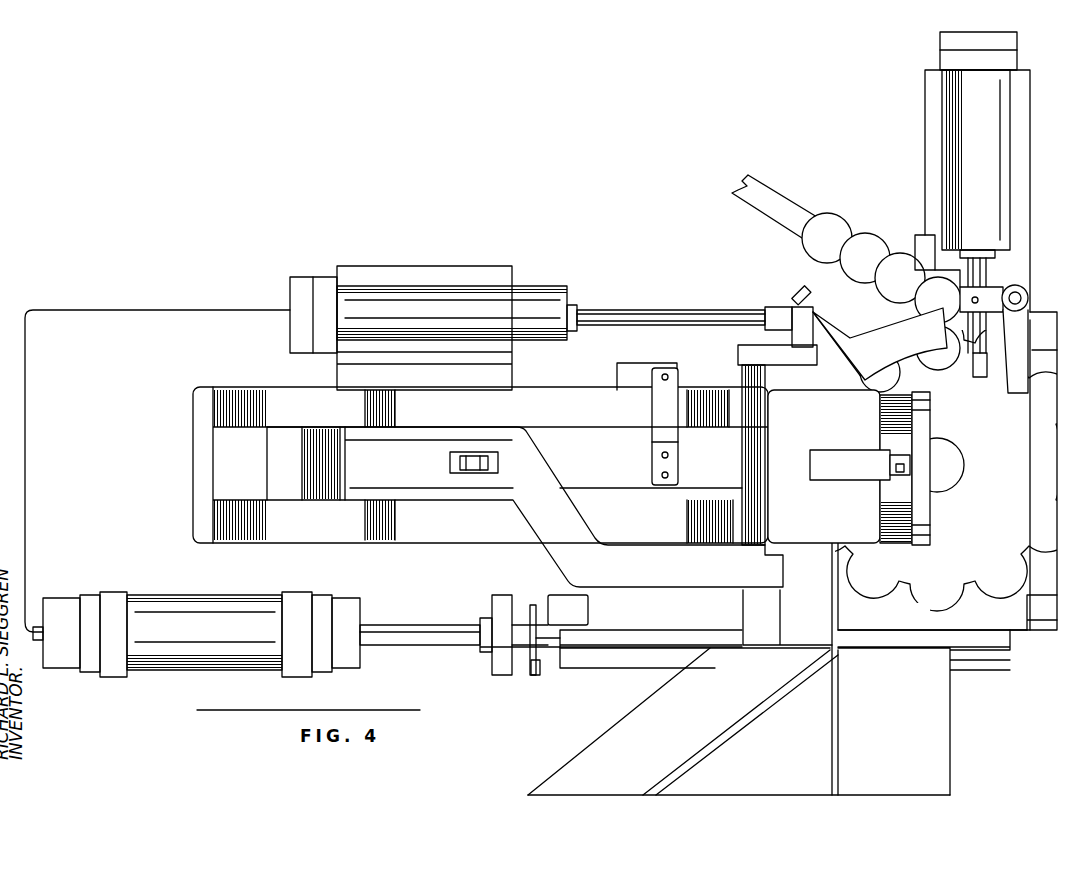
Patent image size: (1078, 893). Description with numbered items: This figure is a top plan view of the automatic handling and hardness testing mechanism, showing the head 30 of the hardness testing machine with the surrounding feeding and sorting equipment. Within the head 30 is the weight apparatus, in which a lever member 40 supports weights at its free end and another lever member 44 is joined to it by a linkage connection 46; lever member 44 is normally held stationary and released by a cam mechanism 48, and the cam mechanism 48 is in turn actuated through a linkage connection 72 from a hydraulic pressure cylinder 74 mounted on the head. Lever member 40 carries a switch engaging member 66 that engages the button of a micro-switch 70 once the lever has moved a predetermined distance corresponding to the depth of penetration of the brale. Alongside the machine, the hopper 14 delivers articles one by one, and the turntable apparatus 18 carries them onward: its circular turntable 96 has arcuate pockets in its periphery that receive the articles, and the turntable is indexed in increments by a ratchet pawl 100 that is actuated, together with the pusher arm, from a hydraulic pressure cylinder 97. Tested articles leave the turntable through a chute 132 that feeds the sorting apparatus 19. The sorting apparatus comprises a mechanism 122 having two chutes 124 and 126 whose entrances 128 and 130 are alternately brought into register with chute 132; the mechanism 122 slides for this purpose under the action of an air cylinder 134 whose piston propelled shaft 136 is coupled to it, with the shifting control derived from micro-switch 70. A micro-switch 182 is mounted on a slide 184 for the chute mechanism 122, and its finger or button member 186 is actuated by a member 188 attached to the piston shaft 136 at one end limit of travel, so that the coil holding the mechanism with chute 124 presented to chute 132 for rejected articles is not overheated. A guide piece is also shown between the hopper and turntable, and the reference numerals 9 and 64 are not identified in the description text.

The feed wheel 9 is at (935, 562).
The hopper 14 is at (790, 211).
The turntable apparatus 18 is at (985, 527).
The sorting apparatus 19 is at (957, 707).
The head 30 is at (305, 400).
The lever member 40 is at (608, 462).
The lever member 44 is at (400, 473).
The linkage connection 46 is at (475, 460).
The cam mechanism 48 is at (751, 478).
The stop block 64 is at (836, 470).
The switch engaging member 66 is at (672, 413).
The micro-switch 70 is at (632, 373).
The linkage connection 72 is at (752, 355).
The hydraulic pressure cylinder 74 is at (542, 302).
The circular turntable 96 is at (1015, 440).
The hydraulic pressure cylinder 97 is at (997, 117).
The ratchet pawl 100 is at (1012, 367).
The mechanism 122 is at (802, 763).
The chute 124 is at (633, 740).
The chute 126 is at (923, 748).
The entrance 128 is at (760, 672).
The entrance 130 is at (868, 668).
The chute 132 is at (757, 601).
The air cylinder 134 is at (190, 612).
The piston propelled shaft 136 is at (416, 633).
The micro-switch 182 is at (573, 606).
The slide 184 is at (622, 634).
The finger or button member 186 is at (544, 607).
The member 188 is at (535, 675).